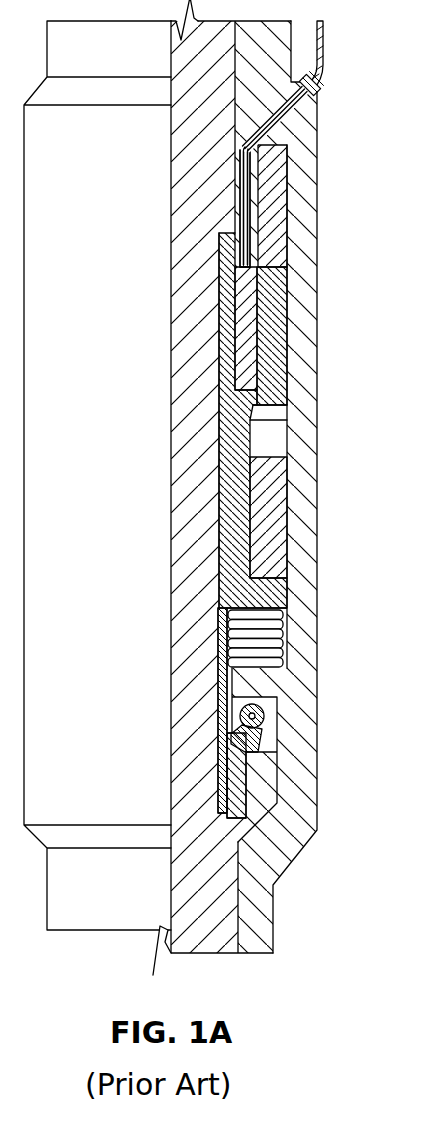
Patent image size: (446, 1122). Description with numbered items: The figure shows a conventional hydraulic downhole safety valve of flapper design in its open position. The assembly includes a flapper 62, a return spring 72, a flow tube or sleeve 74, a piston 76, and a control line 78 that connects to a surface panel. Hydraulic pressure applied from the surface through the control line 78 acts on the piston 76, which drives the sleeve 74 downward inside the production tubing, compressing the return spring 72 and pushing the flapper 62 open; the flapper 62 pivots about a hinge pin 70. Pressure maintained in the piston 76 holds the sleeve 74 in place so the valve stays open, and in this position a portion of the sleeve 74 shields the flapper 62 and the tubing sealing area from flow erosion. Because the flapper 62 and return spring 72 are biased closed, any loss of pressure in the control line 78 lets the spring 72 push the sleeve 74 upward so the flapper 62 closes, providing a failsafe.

The flapper 62 is at (237, 795).
The hinge pin 70 is at (272, 714).
The return spring 72 is at (272, 638).
The flow tube or sleeve 74 is at (236, 447).
The piston 76 is at (262, 298).
The control line 78 is at (333, 51).